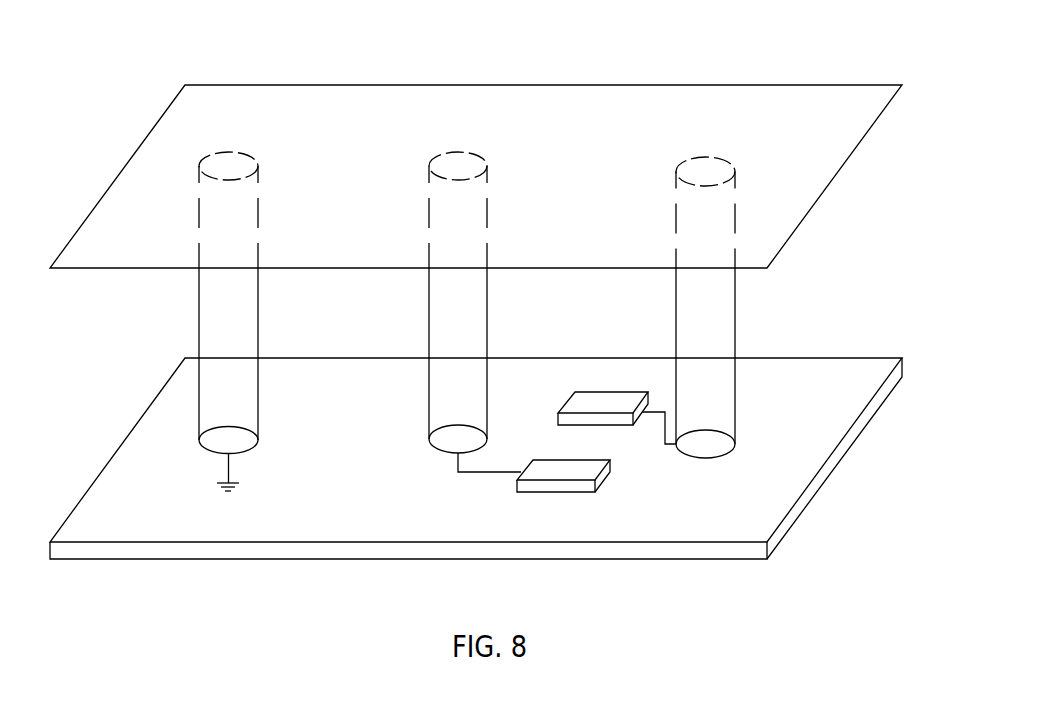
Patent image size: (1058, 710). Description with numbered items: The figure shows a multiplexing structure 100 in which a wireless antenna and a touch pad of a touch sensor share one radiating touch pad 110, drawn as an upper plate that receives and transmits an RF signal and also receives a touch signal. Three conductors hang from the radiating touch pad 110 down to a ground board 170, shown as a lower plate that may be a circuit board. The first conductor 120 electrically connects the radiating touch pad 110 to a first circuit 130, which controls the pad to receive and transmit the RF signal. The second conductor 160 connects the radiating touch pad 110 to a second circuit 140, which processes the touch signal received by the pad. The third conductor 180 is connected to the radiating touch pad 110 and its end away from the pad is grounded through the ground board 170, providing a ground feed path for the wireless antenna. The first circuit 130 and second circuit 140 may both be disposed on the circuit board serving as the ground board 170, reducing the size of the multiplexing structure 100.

The multiplexing structure 100 is at (520, 60).
The radiating touch pad 110 is at (808, 162).
The first conductor 120 is at (713, 322).
The first circuit 130 is at (599, 402).
The second circuit 140 is at (555, 473).
The second conductor 160 is at (456, 300).
The ground board 170 is at (798, 408).
The third conductor 180 is at (228, 300).